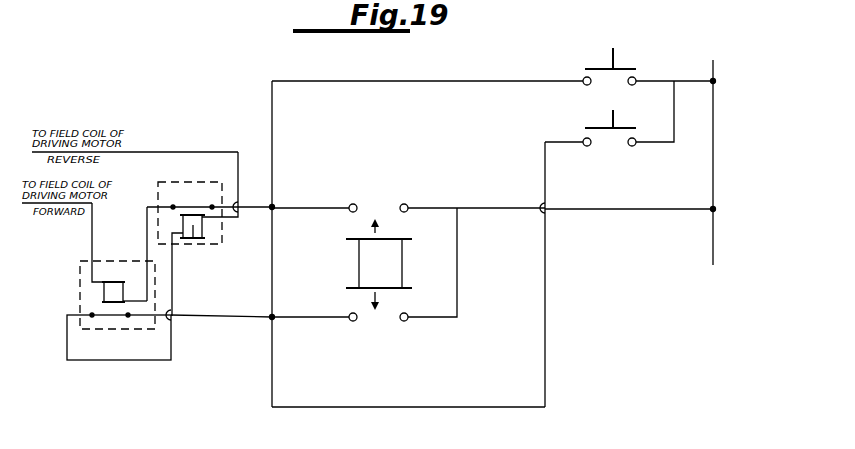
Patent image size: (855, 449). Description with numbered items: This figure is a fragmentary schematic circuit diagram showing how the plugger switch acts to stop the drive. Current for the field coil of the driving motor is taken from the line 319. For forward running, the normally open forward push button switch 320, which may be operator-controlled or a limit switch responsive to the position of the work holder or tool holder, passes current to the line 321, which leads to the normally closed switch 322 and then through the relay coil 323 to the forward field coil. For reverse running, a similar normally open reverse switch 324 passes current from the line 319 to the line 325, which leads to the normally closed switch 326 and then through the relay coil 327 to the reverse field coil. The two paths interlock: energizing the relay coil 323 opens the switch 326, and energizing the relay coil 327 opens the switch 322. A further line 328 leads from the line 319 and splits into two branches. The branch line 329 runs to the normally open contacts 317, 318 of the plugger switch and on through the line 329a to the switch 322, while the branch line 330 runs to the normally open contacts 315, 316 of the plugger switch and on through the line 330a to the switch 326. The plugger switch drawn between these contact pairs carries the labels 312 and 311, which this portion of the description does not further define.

The lower relay coil winding 311 is at (400, 289).
The upper relay coil winding 312 is at (398, 239).
The normally open contact 315 is at (404, 321).
The normally open contact 316 is at (352, 321).
The normally open contact 317 is at (407, 205).
The normally open contact 318 is at (356, 205).
The line 319 is at (714, 130).
The forward push button switch 320 is at (635, 60).
The line 321 is at (402, 74).
The normally closed switch 322 is at (193, 203).
The relay coil 323 is at (112, 290).
The reverse switch 324 is at (634, 124).
The line 325 is at (422, 398).
The normally closed switch 326 is at (103, 313).
The relay coil 327 is at (193, 238).
The line 328 is at (630, 209).
The branch line 329 is at (448, 208).
The line 329a is at (310, 207).
The branch line 330 is at (437, 318).
The line 330a is at (308, 317).